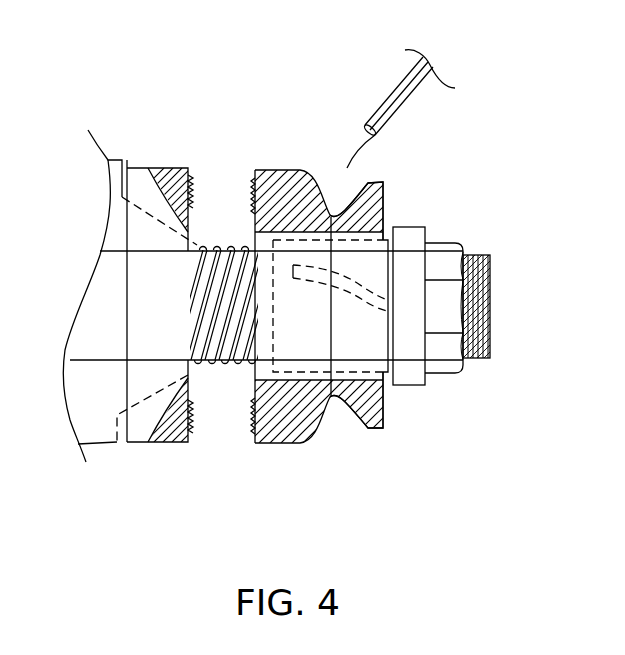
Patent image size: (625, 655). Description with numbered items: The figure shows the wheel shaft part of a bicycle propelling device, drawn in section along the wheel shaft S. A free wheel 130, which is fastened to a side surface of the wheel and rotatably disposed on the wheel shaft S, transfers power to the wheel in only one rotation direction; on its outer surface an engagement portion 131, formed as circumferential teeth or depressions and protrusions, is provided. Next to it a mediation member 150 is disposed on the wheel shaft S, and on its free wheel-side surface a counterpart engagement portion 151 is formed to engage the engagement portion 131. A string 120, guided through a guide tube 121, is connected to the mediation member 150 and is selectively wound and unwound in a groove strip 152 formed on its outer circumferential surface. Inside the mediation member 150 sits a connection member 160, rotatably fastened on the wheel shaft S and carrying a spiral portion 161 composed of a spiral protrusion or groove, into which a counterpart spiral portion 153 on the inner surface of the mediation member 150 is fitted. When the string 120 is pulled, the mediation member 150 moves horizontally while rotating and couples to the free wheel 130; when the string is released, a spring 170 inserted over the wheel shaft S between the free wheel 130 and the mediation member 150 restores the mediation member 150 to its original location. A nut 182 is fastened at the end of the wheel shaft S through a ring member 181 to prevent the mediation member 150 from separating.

The wheel shaft S is at (75, 378).
The string 120 is at (333, 217).
The guide tube 121 is at (378, 107).
The free wheel 130 is at (138, 425).
The engagement portion 131 is at (187, 428).
The mediation member 150 is at (283, 445).
The counterpart engagement portion 151 is at (254, 428).
The groove strip 152 is at (345, 390).
The counterpart spiral portion 153 is at (429, 236).
The connection member 160 is at (387, 392).
The spiral portion 161 is at (363, 267).
The spring 170 is at (208, 245).
The ring member 181 is at (412, 375).
The nut 182 is at (452, 366).